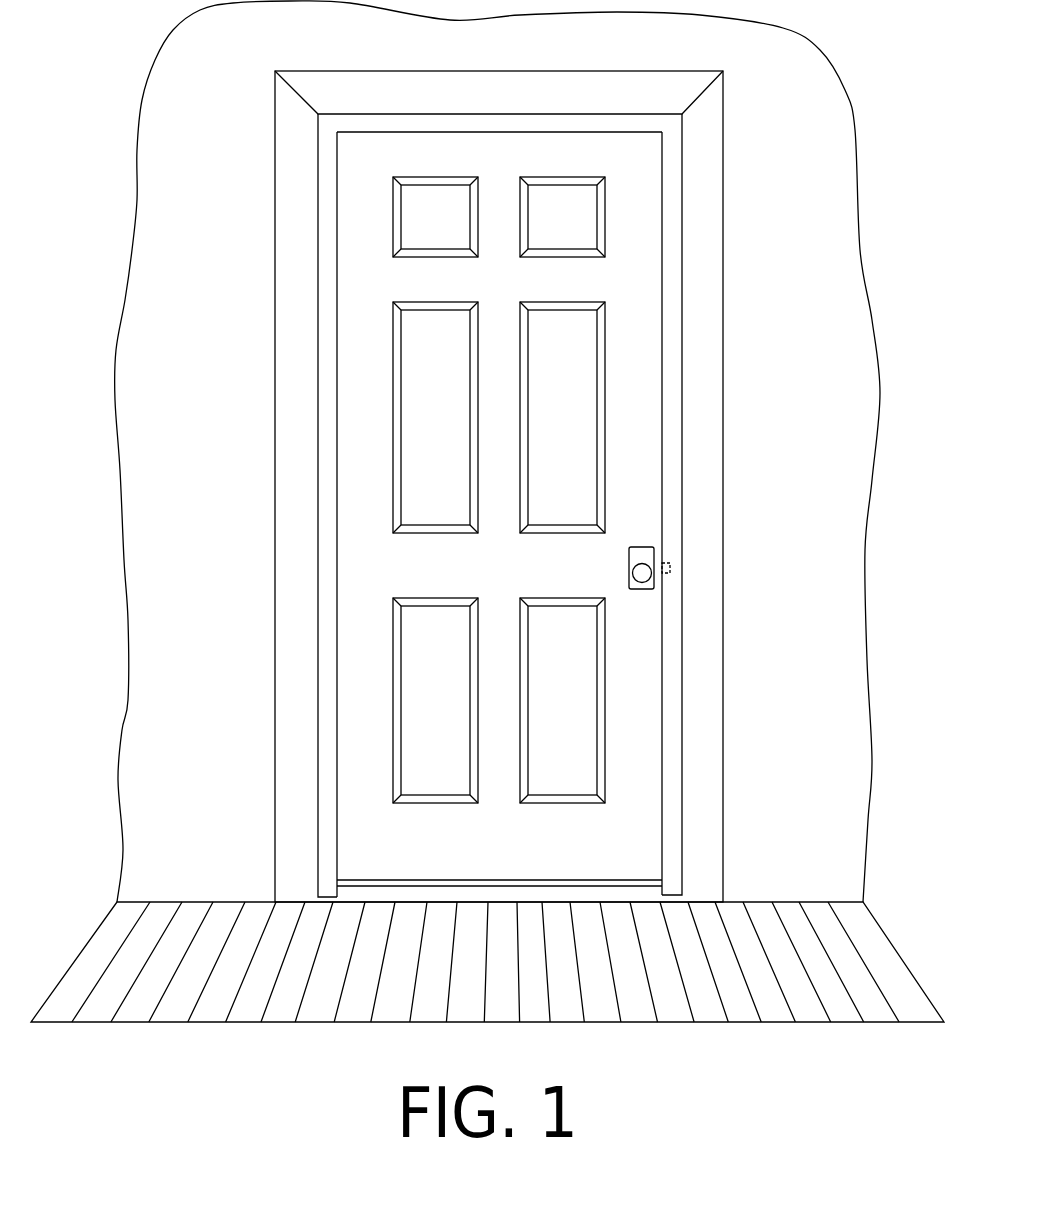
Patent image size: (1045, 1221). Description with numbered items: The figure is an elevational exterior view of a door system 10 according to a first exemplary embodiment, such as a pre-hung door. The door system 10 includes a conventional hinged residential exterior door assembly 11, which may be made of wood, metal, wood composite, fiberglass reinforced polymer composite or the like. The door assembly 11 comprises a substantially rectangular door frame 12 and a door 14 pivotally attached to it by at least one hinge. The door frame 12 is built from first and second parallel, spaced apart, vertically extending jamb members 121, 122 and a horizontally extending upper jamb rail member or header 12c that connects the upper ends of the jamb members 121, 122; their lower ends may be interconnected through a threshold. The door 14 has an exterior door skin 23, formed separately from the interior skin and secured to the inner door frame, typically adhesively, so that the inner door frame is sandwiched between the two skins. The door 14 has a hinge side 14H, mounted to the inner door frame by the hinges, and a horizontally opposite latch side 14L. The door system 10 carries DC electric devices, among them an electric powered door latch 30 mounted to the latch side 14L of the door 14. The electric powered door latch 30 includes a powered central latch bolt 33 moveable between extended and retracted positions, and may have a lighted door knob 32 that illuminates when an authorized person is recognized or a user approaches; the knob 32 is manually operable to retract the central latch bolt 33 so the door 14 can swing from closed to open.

The door system 10 is at (487, 511).
The door assembly 11 is at (730, 380).
The door frame 12 is at (501, 466).
The header 12c is at (401, 123).
The first jamb member 121 is at (328, 690).
The second jamb member 122 is at (670, 692).
The door 14 is at (499, 514).
The hinge side 14H is at (338, 213).
The latch side 14L is at (662, 215).
The exterior door skin 23 is at (625, 160).
The electric powered door latch 30 is at (674, 594).
The door knob 32 is at (633, 572).
The central latch bolt 33 is at (670, 565).